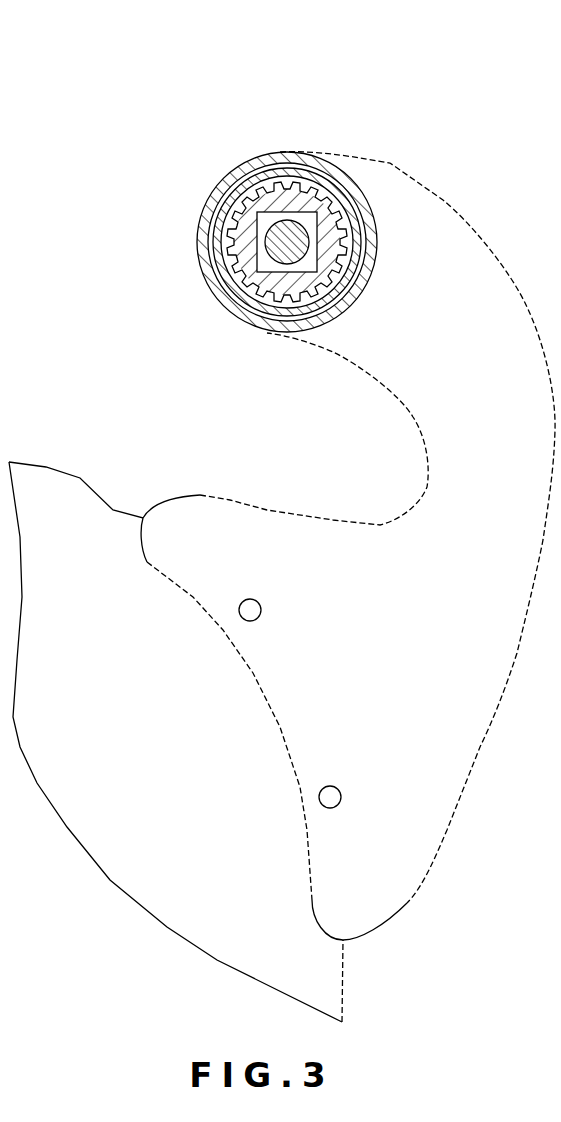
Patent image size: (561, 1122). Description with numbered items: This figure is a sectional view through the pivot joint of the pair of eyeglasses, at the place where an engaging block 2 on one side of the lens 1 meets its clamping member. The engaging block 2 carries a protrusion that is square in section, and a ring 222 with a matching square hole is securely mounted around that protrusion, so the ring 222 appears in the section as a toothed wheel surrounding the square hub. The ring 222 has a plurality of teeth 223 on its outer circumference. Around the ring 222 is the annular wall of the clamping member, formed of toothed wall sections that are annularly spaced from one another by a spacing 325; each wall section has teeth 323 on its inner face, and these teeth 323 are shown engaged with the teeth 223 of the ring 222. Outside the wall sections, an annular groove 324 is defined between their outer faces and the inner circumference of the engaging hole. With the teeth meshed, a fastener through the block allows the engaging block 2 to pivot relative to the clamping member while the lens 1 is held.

The lens 1 is at (46, 467).
The engaging block 2 is at (390, 163).
The annular groove 324 is at (237, 185).
The teeth 323 is at (258, 175).
The ring 222 is at (290, 197).
The teeth 223 is at (305, 190).
The spacing 325 is at (325, 192).